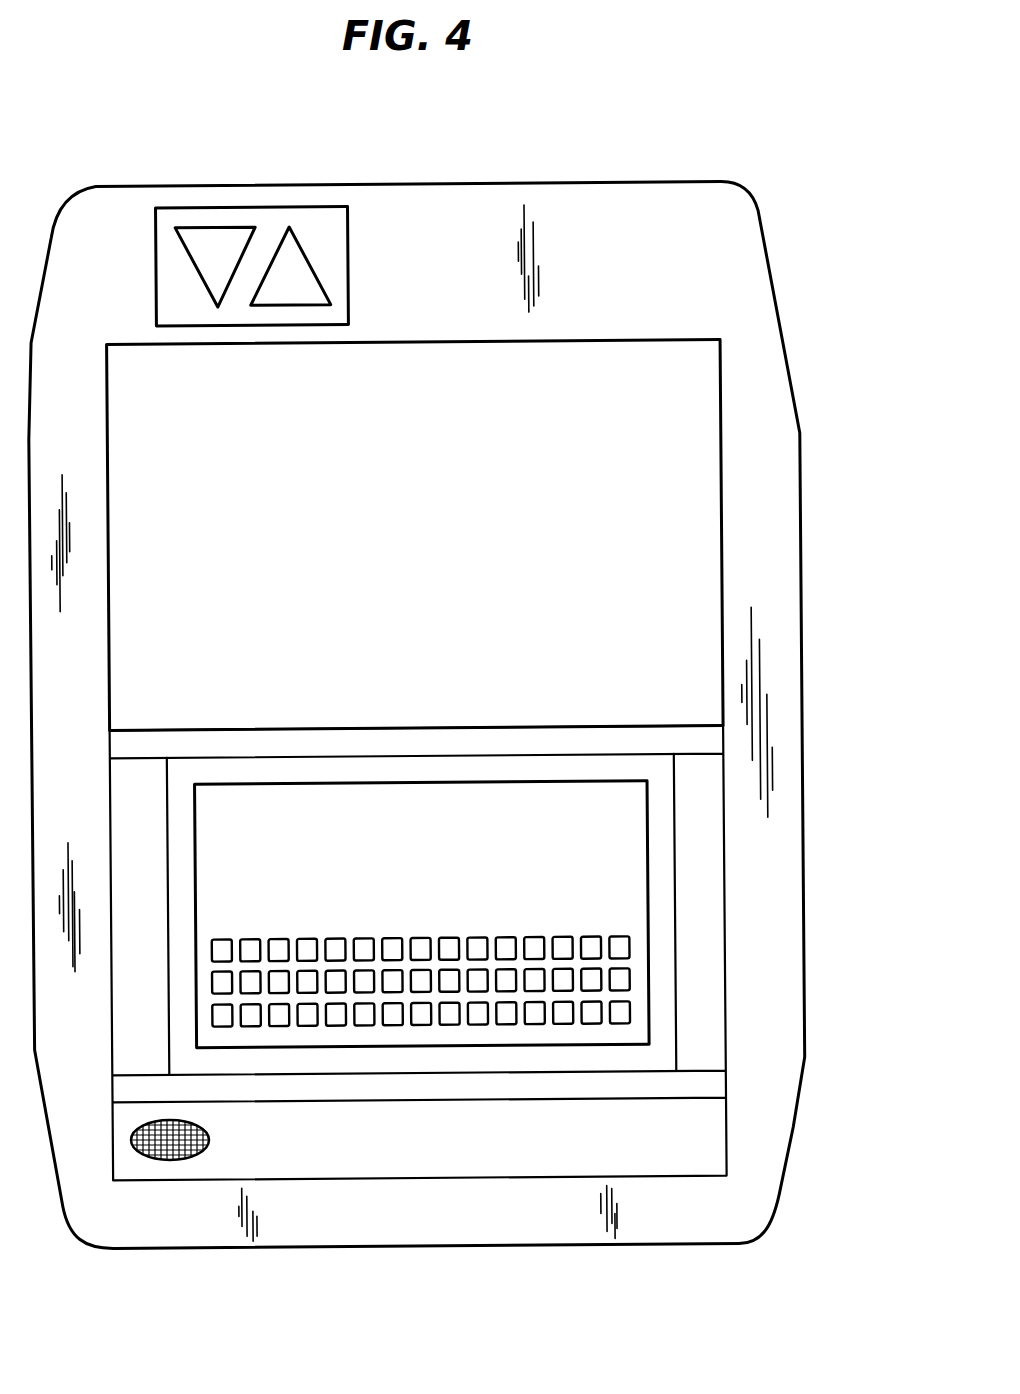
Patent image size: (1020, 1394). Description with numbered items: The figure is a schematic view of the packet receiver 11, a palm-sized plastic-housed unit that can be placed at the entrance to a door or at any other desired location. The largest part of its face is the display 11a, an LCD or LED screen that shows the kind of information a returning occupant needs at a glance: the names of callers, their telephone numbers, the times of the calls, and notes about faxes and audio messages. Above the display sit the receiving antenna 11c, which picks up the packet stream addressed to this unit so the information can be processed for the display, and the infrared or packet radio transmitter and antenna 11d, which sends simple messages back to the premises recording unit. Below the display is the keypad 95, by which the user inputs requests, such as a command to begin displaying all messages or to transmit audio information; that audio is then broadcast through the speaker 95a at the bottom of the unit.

The packet receiver 11 is at (826, 537).
The display 11a is at (608, 355).
The receiving antenna 11c is at (213, 265).
The transmitter and antenna 11d is at (292, 260).
The keypad 95 is at (432, 847).
The speaker 95a is at (208, 1148).